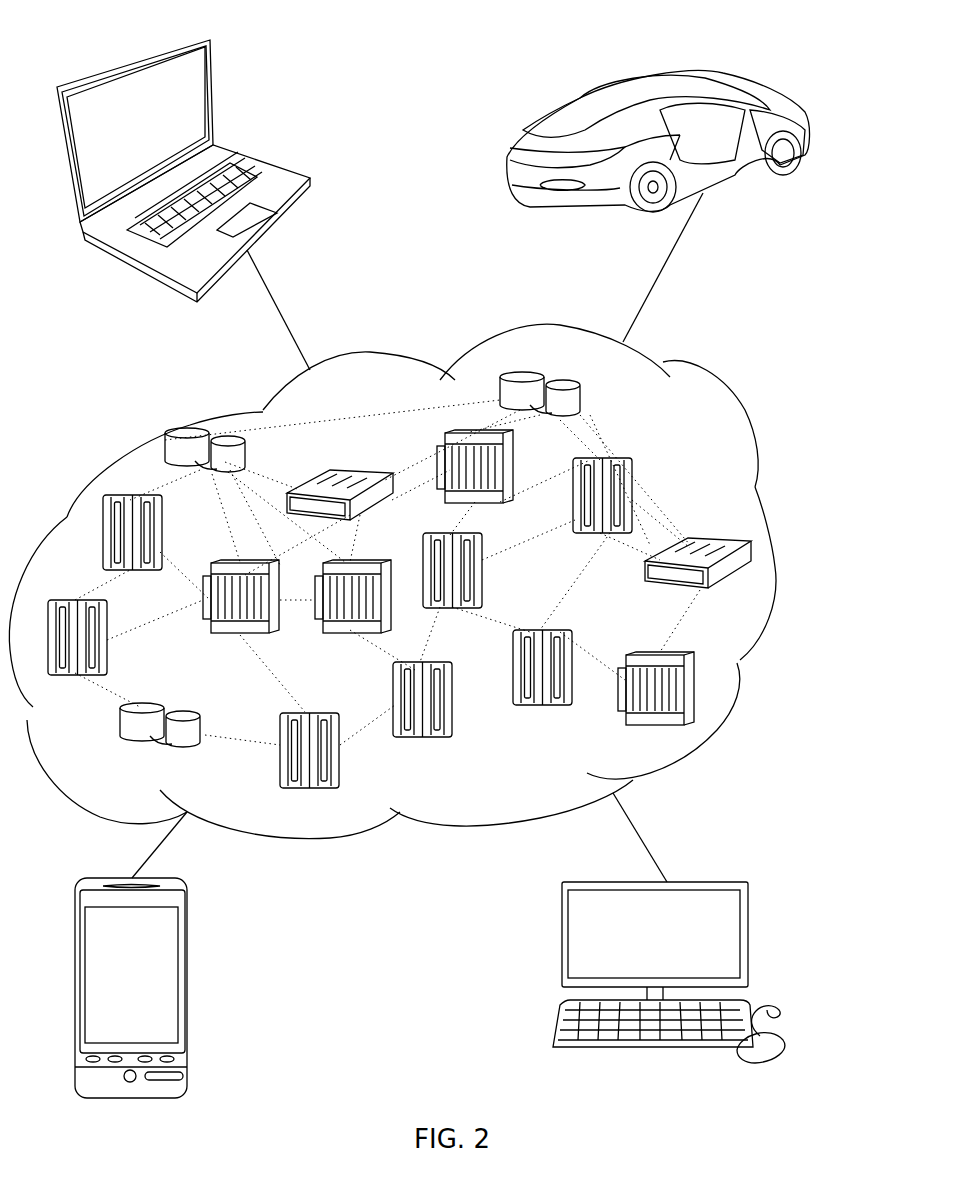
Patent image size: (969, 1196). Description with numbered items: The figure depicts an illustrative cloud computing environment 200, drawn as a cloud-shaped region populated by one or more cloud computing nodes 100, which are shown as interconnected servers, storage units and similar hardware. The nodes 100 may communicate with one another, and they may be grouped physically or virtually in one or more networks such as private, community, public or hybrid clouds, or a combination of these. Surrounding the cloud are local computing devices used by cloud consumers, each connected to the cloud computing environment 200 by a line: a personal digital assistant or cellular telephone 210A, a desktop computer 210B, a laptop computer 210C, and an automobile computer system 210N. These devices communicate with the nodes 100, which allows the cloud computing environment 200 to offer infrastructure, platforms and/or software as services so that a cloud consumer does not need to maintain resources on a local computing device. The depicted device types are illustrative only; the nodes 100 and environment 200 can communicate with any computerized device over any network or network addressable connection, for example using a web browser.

The cloud computing node 100 is at (723, 522).
The cloud computing environment 200 is at (728, 388).
The personal digital assistant or cellular telephone 210A is at (187, 902).
The desktop computer 210B is at (747, 900).
The laptop computer 210C is at (310, 146).
The automobile computer system 210N is at (803, 62).